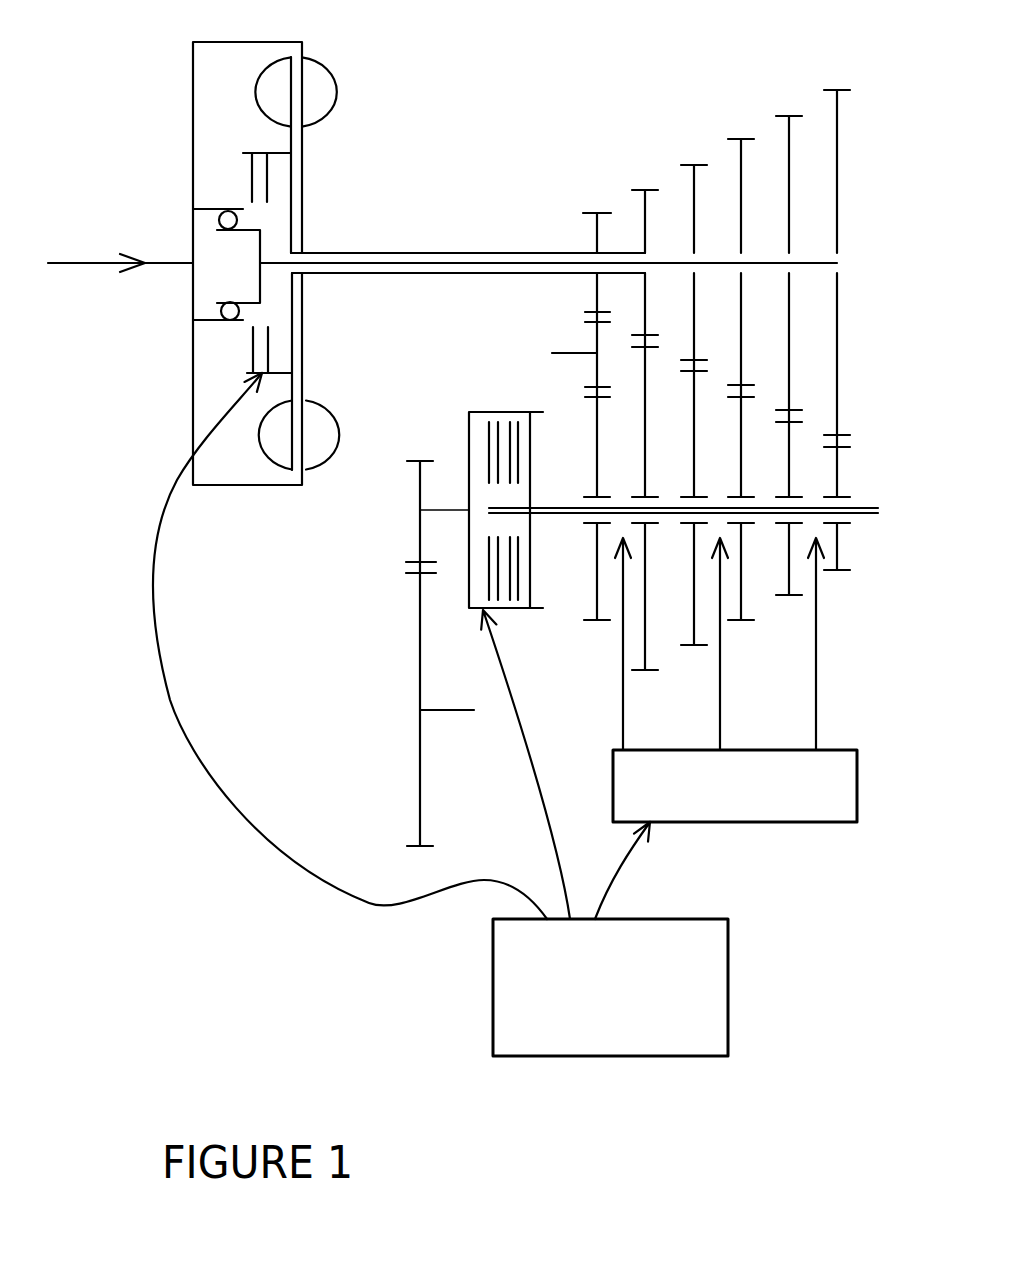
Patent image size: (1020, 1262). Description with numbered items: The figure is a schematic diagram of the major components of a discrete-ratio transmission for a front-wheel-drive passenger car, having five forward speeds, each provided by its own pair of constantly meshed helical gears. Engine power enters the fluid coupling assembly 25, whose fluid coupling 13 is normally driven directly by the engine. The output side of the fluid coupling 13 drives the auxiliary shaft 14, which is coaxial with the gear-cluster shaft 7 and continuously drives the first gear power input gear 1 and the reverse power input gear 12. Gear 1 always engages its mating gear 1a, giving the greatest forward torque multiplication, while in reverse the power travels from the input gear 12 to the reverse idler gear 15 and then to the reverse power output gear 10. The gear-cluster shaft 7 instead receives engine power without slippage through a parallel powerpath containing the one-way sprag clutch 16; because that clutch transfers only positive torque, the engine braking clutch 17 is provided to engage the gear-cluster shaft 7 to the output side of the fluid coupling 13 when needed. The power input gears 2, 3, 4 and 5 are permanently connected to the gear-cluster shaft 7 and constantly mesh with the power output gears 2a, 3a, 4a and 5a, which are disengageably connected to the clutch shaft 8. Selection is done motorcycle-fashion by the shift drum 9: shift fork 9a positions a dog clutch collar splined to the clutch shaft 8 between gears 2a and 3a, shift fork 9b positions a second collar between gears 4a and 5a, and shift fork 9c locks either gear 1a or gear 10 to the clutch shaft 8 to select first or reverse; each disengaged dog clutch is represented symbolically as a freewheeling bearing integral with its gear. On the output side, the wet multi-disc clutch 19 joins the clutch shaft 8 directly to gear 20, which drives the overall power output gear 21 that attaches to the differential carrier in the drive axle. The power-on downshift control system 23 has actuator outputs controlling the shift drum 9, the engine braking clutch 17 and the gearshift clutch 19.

The fluid coupling assembly 25 is at (173, 50).
The fluid coupling 13 is at (337, 105).
The engine braking clutch 17 is at (260, 153).
The one-way sprag clutch 16 is at (230, 320).
The auxiliary shaft 14 is at (408, 253).
The gear-cluster shaft 7 is at (778, 262).
The reverse power input gear 12 is at (583, 213).
The reverse idler gear 15 is at (595, 342).
The reverse power output gear 10 is at (597, 600).
The first gear power input gear 1 is at (641, 216).
The second gear power input gear 2 is at (690, 192).
The third gear power input gear 3 is at (737, 168).
The fourth gear power input gear 4 is at (786, 135).
The fifth gear power input gear 5 is at (834, 113).
The first gear power output gear 1a is at (645, 425).
The second gear power output gear 2a is at (694, 425).
The third gear power output gear 3a is at (741, 455).
The fourth gear power output gear 4a is at (789, 448).
The fifth gear power output gear 5a is at (838, 455).
The clutch shaft 8 is at (546, 508).
The wet multi-disc clutch 19 is at (478, 412).
The gear 20 is at (420, 545).
The overall power output gear 21 is at (420, 669).
The shift drum 9 is at (740, 822).
The shift fork 9a is at (720, 670).
The shift fork 9b is at (816, 648).
The shift fork 9c is at (623, 692).
The power-on downshift control system 23 is at (728, 950).